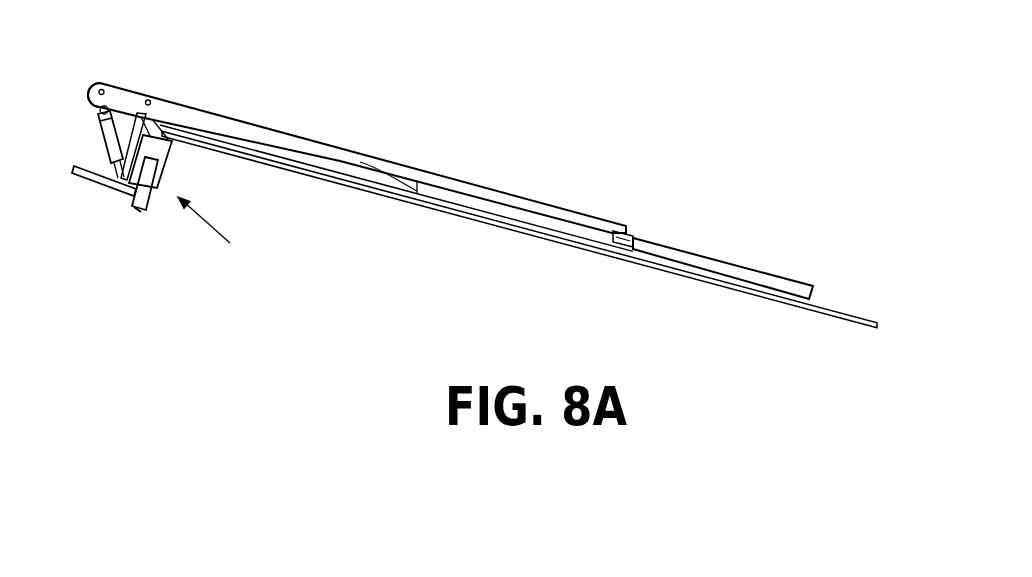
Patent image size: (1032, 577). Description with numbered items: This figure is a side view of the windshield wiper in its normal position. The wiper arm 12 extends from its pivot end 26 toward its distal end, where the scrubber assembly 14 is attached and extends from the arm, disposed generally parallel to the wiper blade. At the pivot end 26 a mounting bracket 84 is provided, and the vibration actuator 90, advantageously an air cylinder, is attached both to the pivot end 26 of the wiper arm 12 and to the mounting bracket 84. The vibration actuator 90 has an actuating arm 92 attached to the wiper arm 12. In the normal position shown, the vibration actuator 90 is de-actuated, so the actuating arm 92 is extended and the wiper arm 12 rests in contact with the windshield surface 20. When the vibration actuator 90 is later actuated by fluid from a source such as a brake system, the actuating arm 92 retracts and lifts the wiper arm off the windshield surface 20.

The wiper arm 12 is at (273, 128).
The scrubber assembly 14 is at (703, 257).
The windshield surface 20 is at (847, 313).
The pivot end 26 is at (91, 81).
The mounting bracket 84 is at (108, 176).
The vibration actuator 90 is at (103, 139).
The actuating arm 92 is at (99, 106).